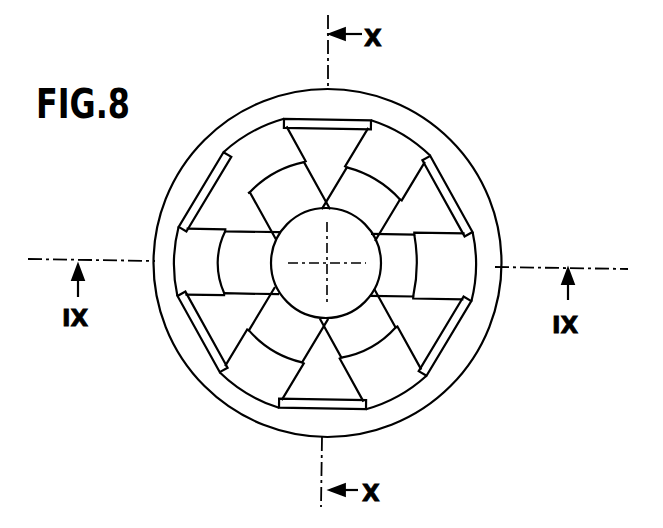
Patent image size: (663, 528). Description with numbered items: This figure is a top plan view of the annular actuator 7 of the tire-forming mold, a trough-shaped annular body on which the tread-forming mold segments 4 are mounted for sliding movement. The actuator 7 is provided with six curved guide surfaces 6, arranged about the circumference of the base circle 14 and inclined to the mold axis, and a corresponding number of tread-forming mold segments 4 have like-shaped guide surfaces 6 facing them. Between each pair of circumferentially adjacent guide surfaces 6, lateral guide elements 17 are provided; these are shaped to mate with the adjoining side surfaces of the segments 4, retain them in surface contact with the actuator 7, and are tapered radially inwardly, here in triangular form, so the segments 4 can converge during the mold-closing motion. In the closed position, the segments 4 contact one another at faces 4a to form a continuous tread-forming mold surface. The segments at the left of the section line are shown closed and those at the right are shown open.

The tread-forming mold segment 4 is at (405, 137).
The faces 4a is at (260, 290).
The curved guide surfaces 6 is at (248, 193).
The actuator 7 is at (478, 180).
The base circle 14 is at (311, 248).
The lateral guide elements 17 is at (190, 192).